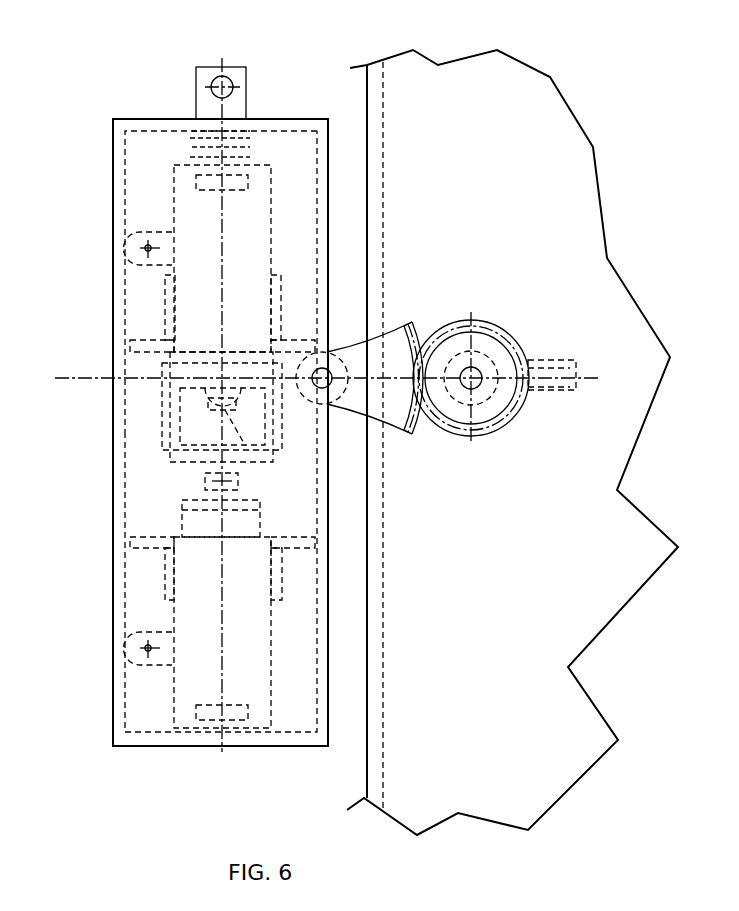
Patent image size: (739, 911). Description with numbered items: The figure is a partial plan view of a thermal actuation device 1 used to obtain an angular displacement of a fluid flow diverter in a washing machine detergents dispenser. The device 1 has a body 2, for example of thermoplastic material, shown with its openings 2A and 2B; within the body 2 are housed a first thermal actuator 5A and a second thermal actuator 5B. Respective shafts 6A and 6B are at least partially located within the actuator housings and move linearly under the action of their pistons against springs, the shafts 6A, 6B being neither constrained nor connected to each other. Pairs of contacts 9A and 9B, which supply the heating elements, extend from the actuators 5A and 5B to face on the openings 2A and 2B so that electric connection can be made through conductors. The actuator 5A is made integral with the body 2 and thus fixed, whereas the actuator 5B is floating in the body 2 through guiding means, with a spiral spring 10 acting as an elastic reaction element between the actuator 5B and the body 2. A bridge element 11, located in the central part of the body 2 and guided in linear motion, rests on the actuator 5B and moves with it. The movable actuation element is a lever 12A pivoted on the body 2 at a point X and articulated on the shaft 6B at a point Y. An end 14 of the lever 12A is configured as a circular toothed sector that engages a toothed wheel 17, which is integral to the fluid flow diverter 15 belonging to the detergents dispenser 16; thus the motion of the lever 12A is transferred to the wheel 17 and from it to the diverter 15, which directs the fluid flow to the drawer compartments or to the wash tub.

The device 1 is at (84, 113).
The body 2 is at (153, 123).
The opening 2A is at (118, 667).
The opening 2B is at (116, 212).
The first thermal actuator 5A is at (165, 691).
The second thermal actuator 5B is at (264, 158).
The shaft 6A is at (210, 484).
The shaft 6B is at (210, 412).
The contacts 9A is at (126, 638).
The contacts 9B is at (125, 248).
The spiral spring 10 is at (247, 142).
The bridge element 11 is at (167, 452).
The lever 12A is at (350, 407).
The end of the lever 14 is at (403, 435).
The fluid flow diverter 15 is at (542, 372).
The detergents dispenser 16 is at (517, 77).
The toothed wheel 17 is at (485, 345).
The pivot point X is at (347, 348).
The articulation point Y is at (222, 397).